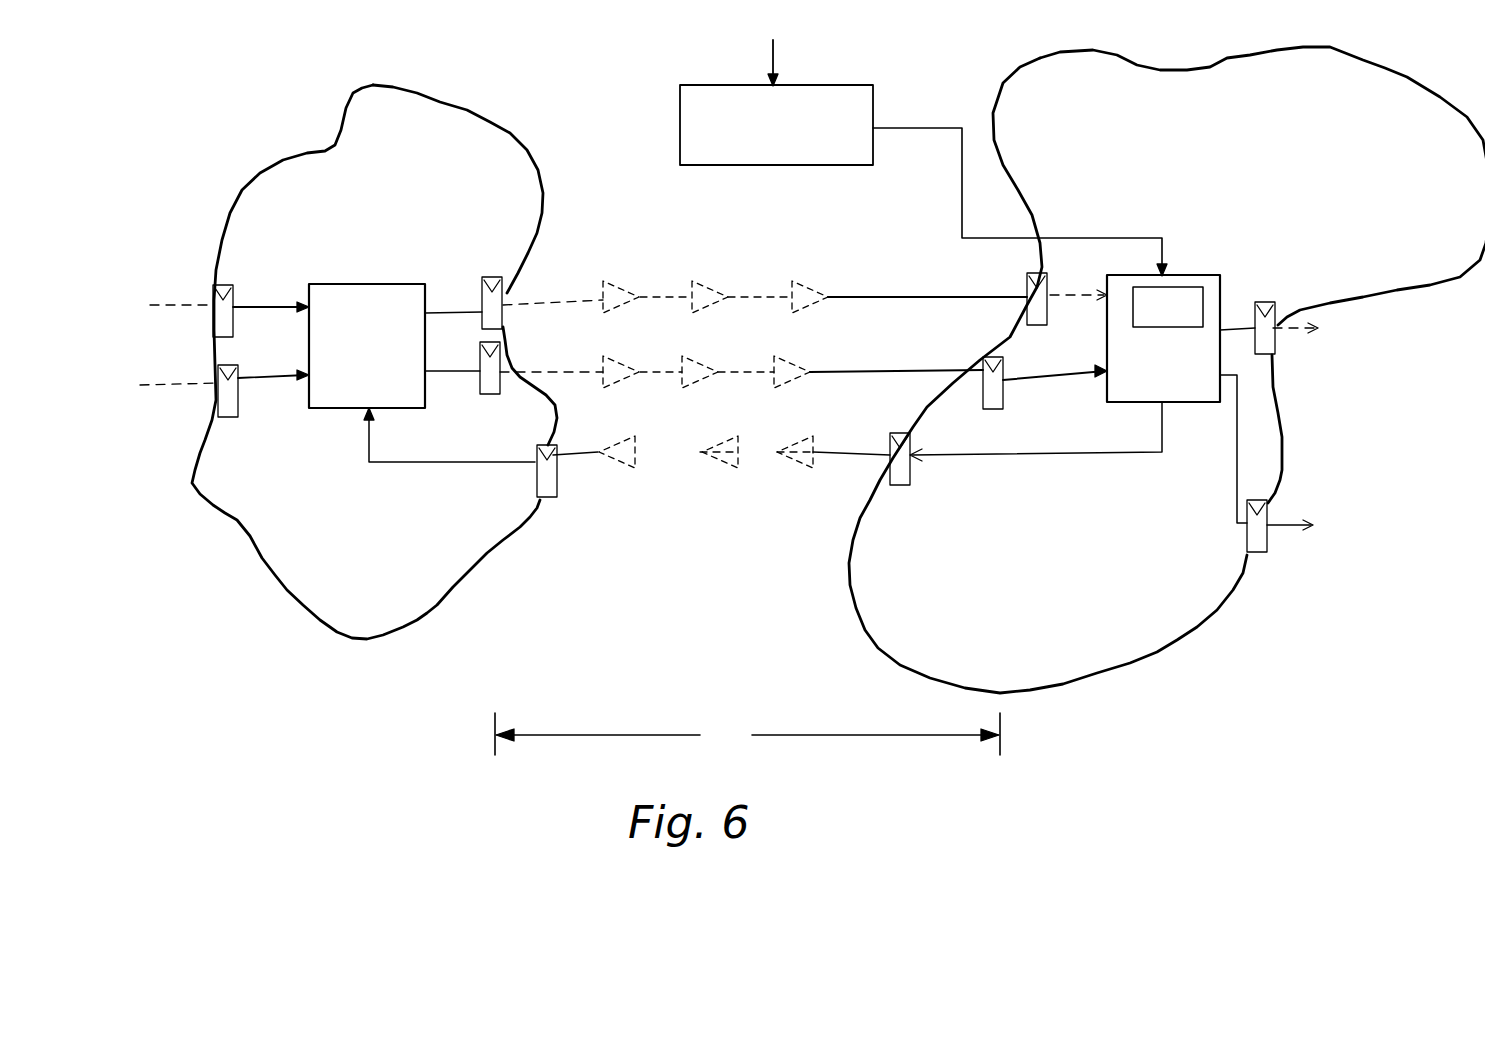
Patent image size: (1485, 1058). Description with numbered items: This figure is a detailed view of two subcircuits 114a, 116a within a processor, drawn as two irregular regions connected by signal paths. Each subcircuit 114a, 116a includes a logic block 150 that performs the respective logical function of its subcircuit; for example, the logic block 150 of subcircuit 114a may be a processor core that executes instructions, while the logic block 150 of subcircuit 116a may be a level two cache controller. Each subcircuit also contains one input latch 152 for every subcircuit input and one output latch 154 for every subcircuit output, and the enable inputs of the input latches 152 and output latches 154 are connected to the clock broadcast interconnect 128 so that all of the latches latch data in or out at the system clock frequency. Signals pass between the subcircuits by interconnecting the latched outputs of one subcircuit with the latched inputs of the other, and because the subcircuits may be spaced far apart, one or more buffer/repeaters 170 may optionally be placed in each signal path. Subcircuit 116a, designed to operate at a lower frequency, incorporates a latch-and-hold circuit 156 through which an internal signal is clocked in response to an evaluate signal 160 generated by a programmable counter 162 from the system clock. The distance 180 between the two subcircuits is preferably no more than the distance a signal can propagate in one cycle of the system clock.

The subcircuit 114a is at (438, 101).
The subcircuit 116a is at (1212, 68).
The clock broadcast interconnect 128 is at (775, 58).
The logic block 150 is at (352, 381).
The input latch 152 is at (233, 300).
The output latch 154 is at (504, 292).
The latch-and-hold circuit 156 is at (1206, 298).
The evaluate signal 160 is at (1092, 238).
The programmable counter 162 is at (874, 100).
The buffer/repeater 170 is at (706, 296).
The distance between subcircuits 180 is at (896, 501).